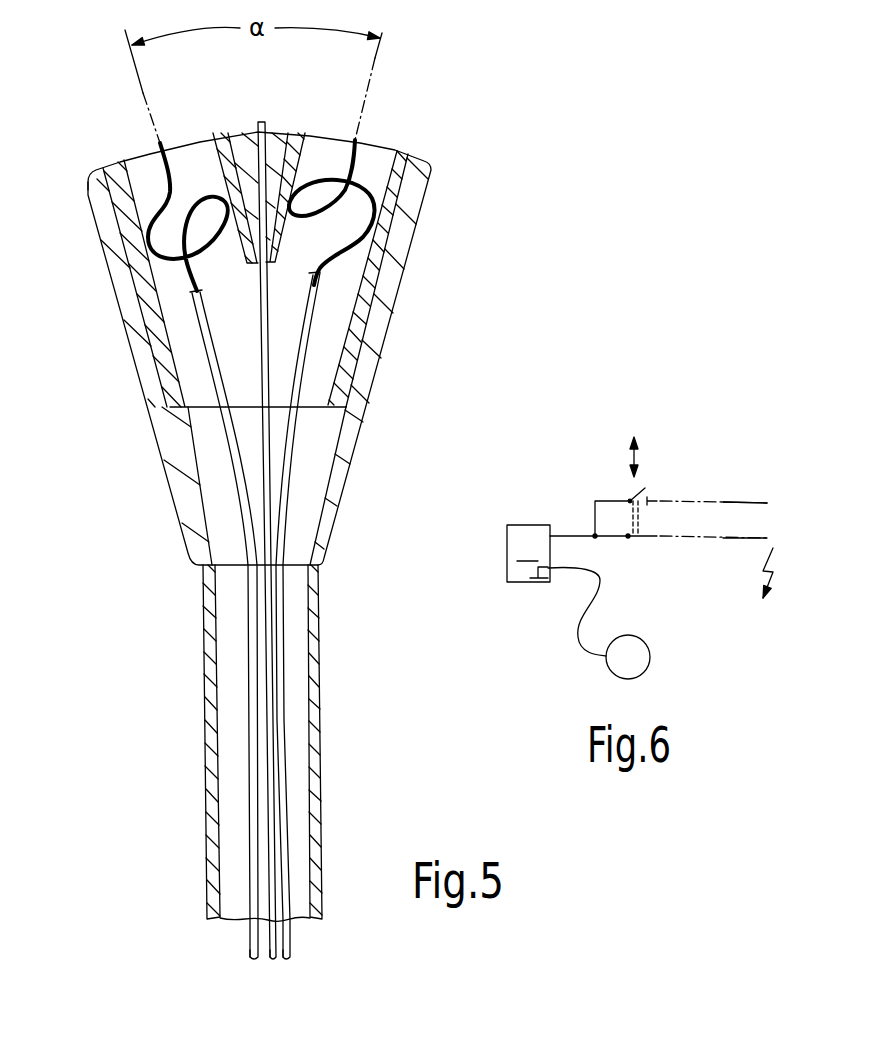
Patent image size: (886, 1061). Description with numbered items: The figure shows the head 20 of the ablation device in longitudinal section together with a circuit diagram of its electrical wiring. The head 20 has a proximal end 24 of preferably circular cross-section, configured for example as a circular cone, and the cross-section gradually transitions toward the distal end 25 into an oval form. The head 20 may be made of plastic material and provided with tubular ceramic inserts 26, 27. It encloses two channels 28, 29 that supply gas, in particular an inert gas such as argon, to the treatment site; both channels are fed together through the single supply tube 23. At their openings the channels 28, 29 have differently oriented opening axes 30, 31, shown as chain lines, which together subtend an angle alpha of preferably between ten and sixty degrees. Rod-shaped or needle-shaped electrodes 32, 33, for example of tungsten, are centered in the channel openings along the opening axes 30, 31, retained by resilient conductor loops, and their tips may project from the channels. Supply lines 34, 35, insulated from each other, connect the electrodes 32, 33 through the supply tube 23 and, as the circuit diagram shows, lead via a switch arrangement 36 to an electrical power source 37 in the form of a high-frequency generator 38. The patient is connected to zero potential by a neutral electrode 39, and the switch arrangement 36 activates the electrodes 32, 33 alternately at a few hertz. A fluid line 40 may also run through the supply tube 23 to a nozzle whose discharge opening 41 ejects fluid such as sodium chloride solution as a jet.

In FIG. 5, the head 20 is at (425, 267).
In FIG. 5, the supply tube 23 is at (316, 747).
In FIG. 5, the proximal end 24 is at (347, 533).
In FIG. 5, the distal end 25 is at (438, 175).
In FIG. 5, the ceramic insert 26 is at (373, 293).
In FIG. 5, the ceramic insert 27 is at (152, 327).
In FIG. 5, the channel 28 is at (373, 163).
In FIG. 5, the channel 29 is at (147, 172).
In FIG. 5, the opening axis 30 is at (373, 58).
In FIG. 5, the opening axis 31 is at (143, 93).
In FIG. 5, the electrode 32 is at (342, 163).
In FIG. 6, the electrode 32 is at (748, 501).
In FIG. 5, the electrode 33 is at (168, 163).
In FIG. 6, the electrode 33 is at (738, 542).
In FIG. 5, the supply line 34 is at (277, 635).
In FIG. 6, the supply line 34 is at (695, 498).
In FIG. 5, the supply line 35 is at (255, 647).
In FIG. 6, the supply line 35 is at (690, 540).
In FIG. 6, the switch arrangement 36 is at (657, 455).
In FIG. 6, the electrical power source 37 is at (532, 505).
In FIG. 6, the high-frequency generator 38 is at (528, 553).
In FIG. 6, the neutral electrode 39 is at (633, 650).
In FIG. 5, the fluid line 40 is at (273, 957).
In FIG. 5, the discharge opening 41 is at (262, 123).